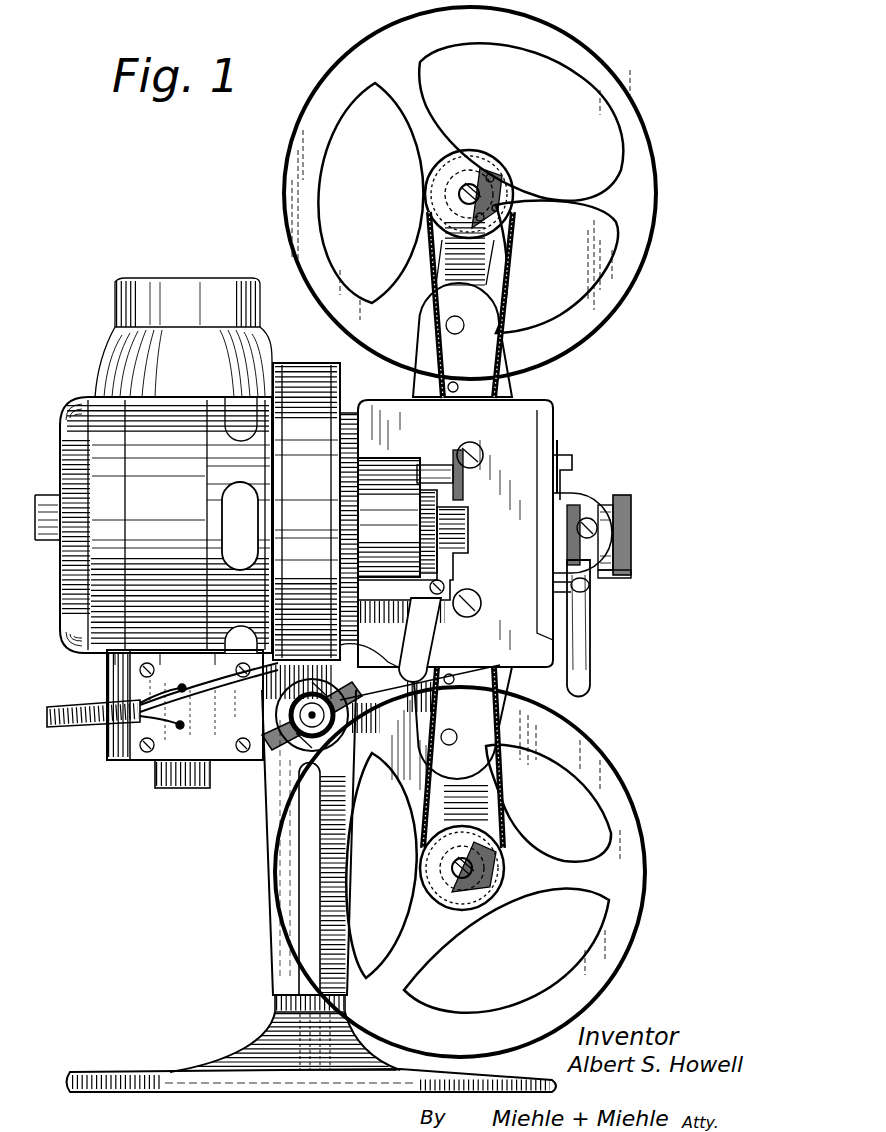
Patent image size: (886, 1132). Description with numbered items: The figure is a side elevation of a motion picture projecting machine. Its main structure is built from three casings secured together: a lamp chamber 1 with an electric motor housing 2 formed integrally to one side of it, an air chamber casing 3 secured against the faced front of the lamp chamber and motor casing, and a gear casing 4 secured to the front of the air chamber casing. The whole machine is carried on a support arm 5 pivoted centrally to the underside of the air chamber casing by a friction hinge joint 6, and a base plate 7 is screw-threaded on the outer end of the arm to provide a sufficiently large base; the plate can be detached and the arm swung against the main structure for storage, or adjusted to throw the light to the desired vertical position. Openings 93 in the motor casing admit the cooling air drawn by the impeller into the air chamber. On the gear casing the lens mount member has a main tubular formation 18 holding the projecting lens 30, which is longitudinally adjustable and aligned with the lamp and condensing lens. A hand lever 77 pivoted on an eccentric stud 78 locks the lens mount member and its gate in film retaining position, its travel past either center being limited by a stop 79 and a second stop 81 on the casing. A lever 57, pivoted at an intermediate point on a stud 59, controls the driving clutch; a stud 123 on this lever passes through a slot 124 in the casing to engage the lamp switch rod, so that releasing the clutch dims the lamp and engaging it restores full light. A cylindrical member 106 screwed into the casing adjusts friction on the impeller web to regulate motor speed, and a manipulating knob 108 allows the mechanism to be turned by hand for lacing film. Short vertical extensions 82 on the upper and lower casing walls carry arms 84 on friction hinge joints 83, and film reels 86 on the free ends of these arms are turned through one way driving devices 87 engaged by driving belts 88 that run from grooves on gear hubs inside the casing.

The lamp chamber 1 is at (97, 382).
The electric motor housing 2 is at (68, 563).
The air chamber casing 3 is at (303, 364).
The gear casing 4 is at (376, 400).
The support arm 5 is at (270, 872).
The friction hinge joint 6 is at (292, 740).
The base plate 7 is at (206, 1070).
The main tubular formation 18 is at (588, 500).
The projecting lens 30 is at (620, 500).
The lever 57 is at (404, 664).
The stud 59 is at (446, 588).
The hand lever 77 is at (588, 630).
The eccentric stud 78 is at (631, 538).
The stop 79 is at (592, 590).
The second stop 81 is at (562, 465).
The short vertical extensions 82 is at (480, 386).
The friction hinge joints 83 is at (464, 325).
The arms 84 is at (486, 257).
The film reels 86 is at (633, 142).
The one way driving devices 87 is at (498, 172).
The driving belts 88 is at (430, 252).
The openings 93 is at (224, 520).
The cylindrical member 106 is at (455, 455).
The manipulating knob 108 is at (630, 568).
The stud 123 is at (418, 630).
The slot 124 is at (448, 618).